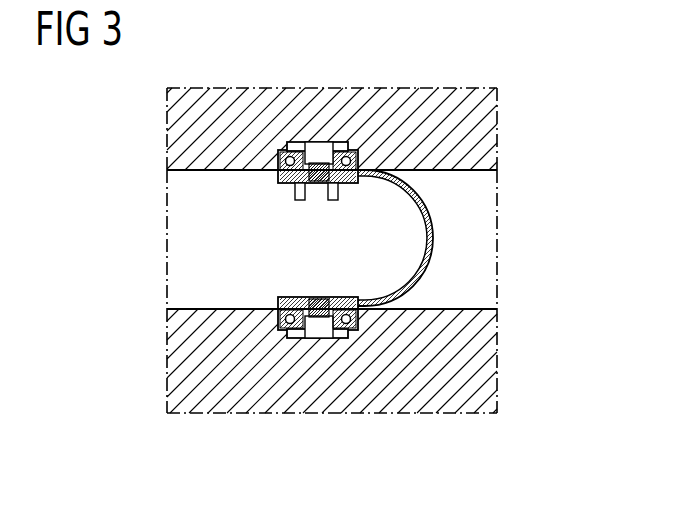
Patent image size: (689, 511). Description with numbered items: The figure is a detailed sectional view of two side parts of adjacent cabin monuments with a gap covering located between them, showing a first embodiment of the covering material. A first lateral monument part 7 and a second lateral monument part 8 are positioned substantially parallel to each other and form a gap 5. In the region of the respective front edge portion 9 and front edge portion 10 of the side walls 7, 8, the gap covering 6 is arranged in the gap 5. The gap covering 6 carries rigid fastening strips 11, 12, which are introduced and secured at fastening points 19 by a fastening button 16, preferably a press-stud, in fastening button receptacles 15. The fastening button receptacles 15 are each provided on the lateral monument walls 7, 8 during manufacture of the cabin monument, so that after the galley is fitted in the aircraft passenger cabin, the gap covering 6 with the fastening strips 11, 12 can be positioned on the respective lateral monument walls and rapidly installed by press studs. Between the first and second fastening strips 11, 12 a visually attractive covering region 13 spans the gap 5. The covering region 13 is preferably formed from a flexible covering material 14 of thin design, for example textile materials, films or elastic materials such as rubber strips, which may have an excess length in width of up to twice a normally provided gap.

The gap 5 is at (483, 215).
The gap covering 6 is at (88, 240).
The first lateral monument part 7 is at (483, 128).
The second lateral monument part 8 is at (483, 368).
The front edge portion 9 is at (137, 120).
The front edge portion 10 is at (134, 361).
The first fastening strip 11 is at (290, 126).
The second fastening strip 12 is at (290, 349).
The covering region 13 is at (472, 238).
The flexible covering material 14 is at (433, 239).
The fastening button receptacle 15 is at (317, 338).
The fastening button 16 is at (318, 305).
The fastening point 19 is at (319, 152).